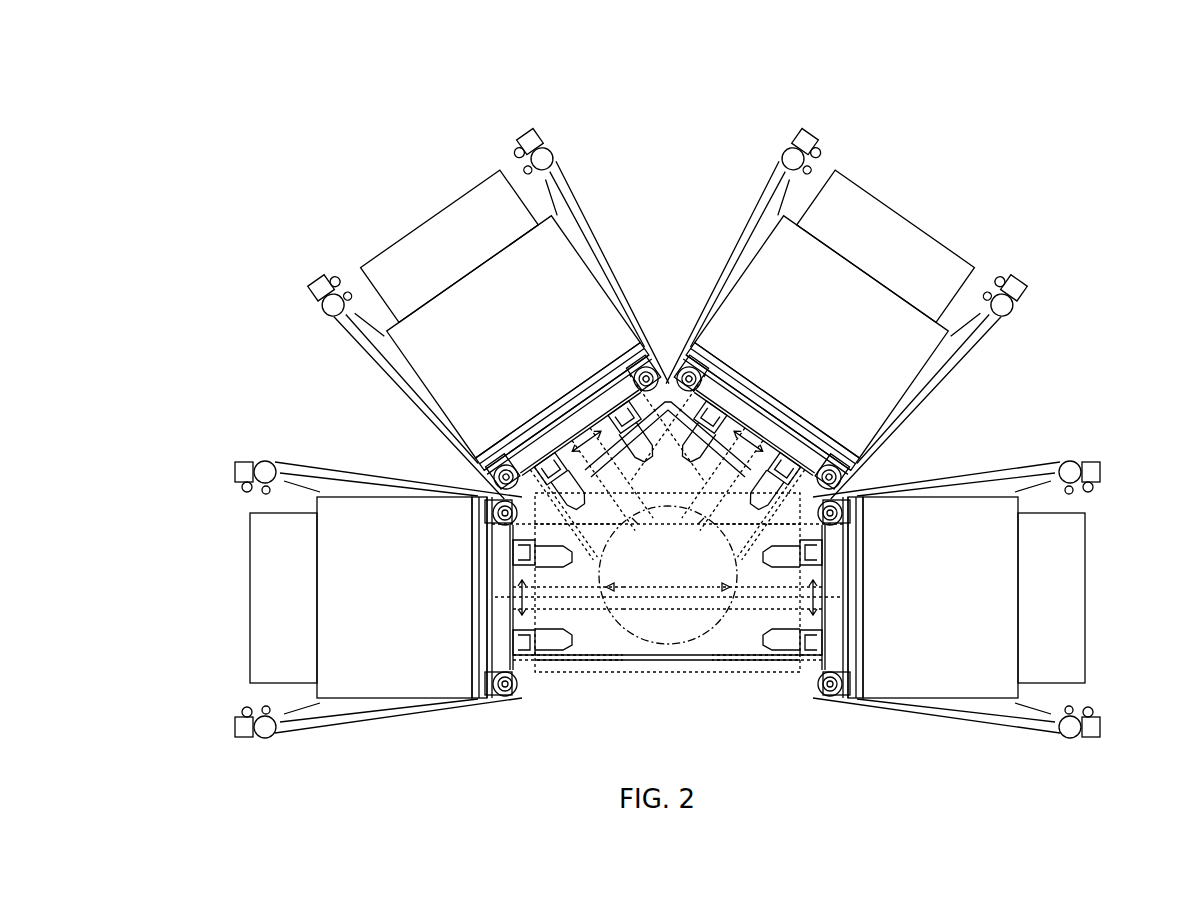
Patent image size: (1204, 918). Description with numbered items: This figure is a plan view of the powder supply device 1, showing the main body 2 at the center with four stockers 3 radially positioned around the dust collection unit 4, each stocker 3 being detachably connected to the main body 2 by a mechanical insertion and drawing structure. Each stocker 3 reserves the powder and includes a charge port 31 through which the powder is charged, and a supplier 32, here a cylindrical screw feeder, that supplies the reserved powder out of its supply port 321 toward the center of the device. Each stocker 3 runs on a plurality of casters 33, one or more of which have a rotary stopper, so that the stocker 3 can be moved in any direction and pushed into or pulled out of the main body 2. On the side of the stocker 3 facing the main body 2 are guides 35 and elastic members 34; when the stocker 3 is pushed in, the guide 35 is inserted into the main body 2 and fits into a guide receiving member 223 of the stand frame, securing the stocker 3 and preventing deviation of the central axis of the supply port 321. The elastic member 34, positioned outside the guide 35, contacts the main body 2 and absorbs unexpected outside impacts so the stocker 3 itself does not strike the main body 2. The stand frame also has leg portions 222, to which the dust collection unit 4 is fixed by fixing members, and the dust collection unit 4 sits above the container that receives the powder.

The supply device 1 is at (1120, 130).
The main body 2 is at (666, 674).
The stocker 3 is at (417, 207).
The dust collection unit 4 is at (690, 676).
The charge port 31 is at (440, 351).
The supplier 32 is at (575, 440).
The caster 33 is at (530, 143).
The elastic member 34 is at (620, 400).
The guide 35 is at (587, 420).
The leg portion 222 is at (670, 395).
The guide receiving member 223 is at (610, 400).
The supply port 321 is at (669, 576).